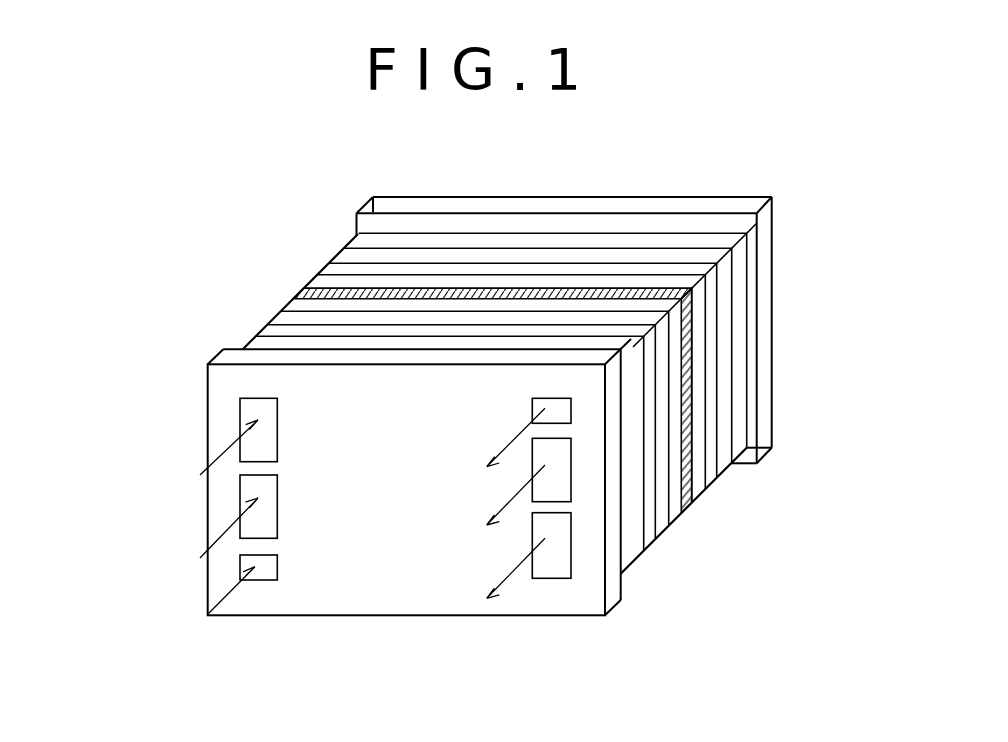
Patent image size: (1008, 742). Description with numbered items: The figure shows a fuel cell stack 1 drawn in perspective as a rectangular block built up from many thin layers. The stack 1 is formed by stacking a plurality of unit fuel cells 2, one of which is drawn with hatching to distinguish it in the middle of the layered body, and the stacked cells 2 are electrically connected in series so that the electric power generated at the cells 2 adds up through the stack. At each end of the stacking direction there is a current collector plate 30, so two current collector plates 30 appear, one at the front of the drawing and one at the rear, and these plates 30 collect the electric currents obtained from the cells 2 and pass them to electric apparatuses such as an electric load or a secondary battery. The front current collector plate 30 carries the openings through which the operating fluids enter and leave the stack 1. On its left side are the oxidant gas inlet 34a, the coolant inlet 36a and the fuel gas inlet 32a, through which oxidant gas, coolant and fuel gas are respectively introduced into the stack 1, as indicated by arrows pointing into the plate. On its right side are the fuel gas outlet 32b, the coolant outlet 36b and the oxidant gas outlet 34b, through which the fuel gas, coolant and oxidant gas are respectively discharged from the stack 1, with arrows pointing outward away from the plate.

The fuel cell stack 1 is at (802, 225).
The fuel cell 2 is at (298, 293).
The current collector plate 30 is at (358, 212).
The fuel gas inlet 32a is at (265, 568).
The fuel gas outlet 32b is at (571, 407).
The oxidant gas inlet 34a is at (266, 439).
The oxidant gas outlet 34b is at (571, 538).
The coolant inlet 36a is at (257, 492).
The coolant outlet 36b is at (571, 472).